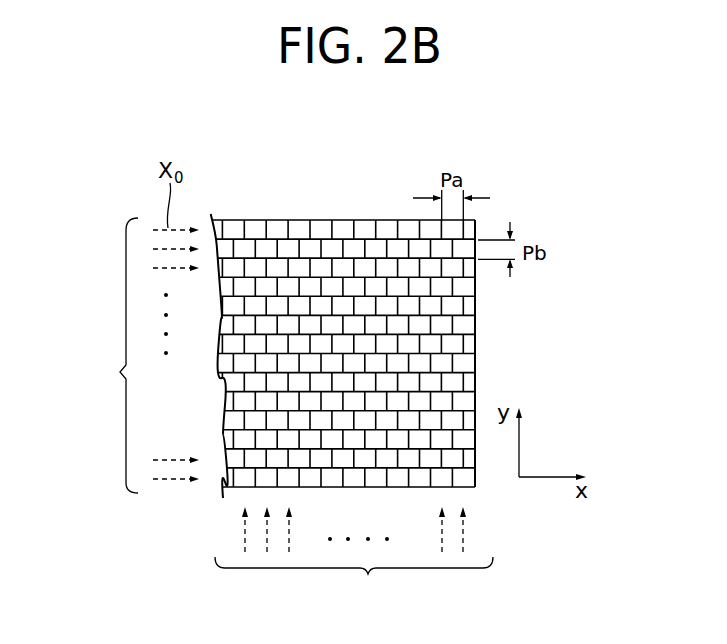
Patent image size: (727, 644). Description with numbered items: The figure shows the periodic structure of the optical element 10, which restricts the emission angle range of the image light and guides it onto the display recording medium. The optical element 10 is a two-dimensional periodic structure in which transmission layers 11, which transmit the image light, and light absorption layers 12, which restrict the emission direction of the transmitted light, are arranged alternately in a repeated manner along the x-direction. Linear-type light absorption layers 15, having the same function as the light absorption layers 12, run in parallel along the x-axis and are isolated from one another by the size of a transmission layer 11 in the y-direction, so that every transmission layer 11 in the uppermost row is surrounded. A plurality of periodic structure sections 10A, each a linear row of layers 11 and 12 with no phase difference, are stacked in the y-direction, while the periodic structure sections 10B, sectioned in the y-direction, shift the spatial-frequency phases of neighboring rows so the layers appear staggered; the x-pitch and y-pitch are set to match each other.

The optical element 10 is at (321, 220).
The periodic structure section in the x-direction 10A is at (102, 355).
The periodic structure section 10B is at (354, 581).
The transmission layer 11 is at (455, 343).
The light absorption layer 12 is at (430, 345).
The linear-type light absorption layer 15 is at (384, 237).